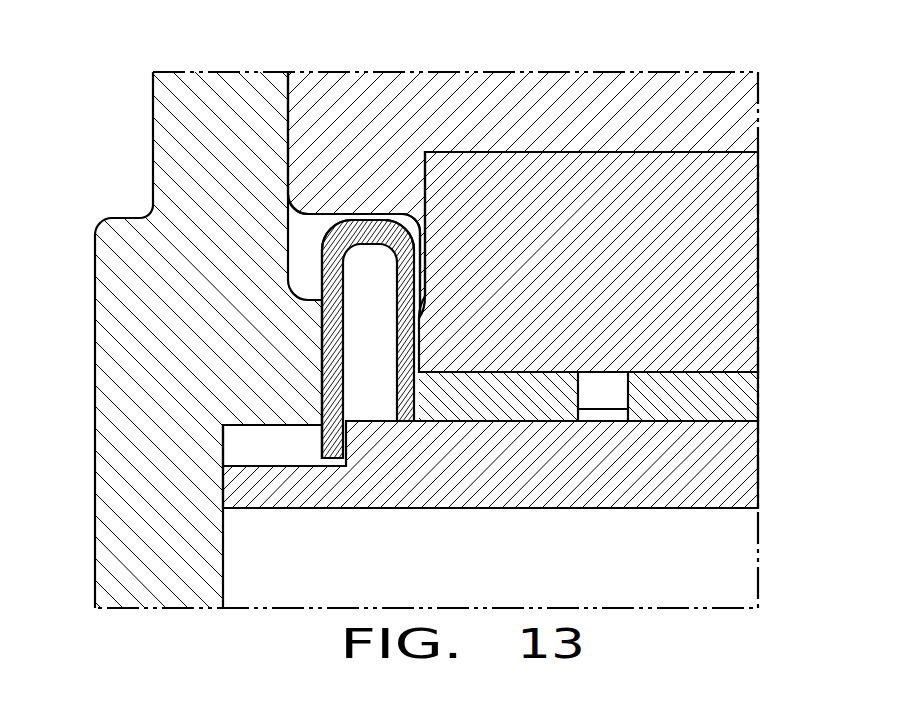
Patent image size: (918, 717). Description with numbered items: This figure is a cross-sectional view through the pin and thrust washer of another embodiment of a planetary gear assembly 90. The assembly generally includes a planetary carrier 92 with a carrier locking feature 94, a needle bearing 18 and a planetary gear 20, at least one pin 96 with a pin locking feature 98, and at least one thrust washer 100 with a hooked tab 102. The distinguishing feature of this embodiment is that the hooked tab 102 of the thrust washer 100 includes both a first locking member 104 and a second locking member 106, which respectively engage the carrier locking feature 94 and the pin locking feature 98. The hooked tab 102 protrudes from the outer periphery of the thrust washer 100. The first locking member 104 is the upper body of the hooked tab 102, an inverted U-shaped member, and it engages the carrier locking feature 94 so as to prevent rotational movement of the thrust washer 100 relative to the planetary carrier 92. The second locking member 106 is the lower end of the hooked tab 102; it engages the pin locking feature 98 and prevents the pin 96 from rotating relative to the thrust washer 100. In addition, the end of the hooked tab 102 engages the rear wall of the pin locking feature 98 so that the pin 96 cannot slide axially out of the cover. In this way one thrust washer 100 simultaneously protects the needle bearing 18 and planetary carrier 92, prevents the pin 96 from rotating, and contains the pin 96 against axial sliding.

The needle bearing 18 is at (724, 434).
The planetary gear 20 is at (613, 152).
The planetary gear assembly 90 is at (730, 105).
The planetary carrier 92 is at (141, 90).
The carrier locking feature 94 is at (340, 200).
The pin 96 is at (758, 490).
The pin locking feature 98 is at (249, 453).
The thrust washer 100 is at (388, 208).
The hooked tab 102 is at (335, 243).
The first locking member 104 is at (310, 280).
The second locking member 106 is at (299, 445).